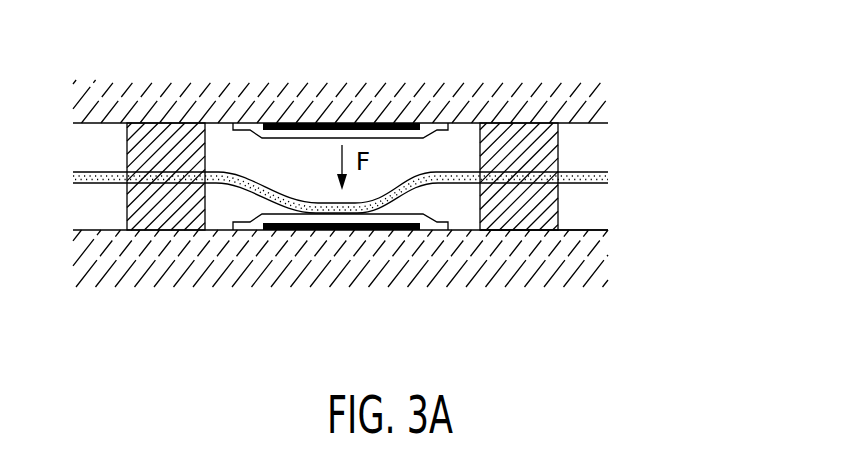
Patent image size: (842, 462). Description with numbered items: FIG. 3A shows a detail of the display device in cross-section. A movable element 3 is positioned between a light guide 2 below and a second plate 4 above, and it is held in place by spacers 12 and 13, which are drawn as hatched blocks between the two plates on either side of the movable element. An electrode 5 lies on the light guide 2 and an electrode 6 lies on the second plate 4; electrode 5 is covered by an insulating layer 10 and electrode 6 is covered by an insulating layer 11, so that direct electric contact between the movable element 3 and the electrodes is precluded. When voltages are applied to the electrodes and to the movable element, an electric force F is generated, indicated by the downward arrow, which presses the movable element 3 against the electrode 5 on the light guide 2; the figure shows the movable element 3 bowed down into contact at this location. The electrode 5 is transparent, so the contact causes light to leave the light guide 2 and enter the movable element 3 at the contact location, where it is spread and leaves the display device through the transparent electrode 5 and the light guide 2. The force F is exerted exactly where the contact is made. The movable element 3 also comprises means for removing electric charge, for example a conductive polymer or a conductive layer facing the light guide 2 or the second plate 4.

The light guide 2 is at (190, 275).
The movable element 3 is at (586, 170).
The second plate 4 is at (168, 102).
The electrode 5 is at (293, 231).
The electrode 6 is at (280, 122).
The insulating layer 10 is at (437, 231).
The insulating layer 11 is at (437, 122).
The spacer 12 is at (513, 140).
The spacer 13 is at (527, 231).